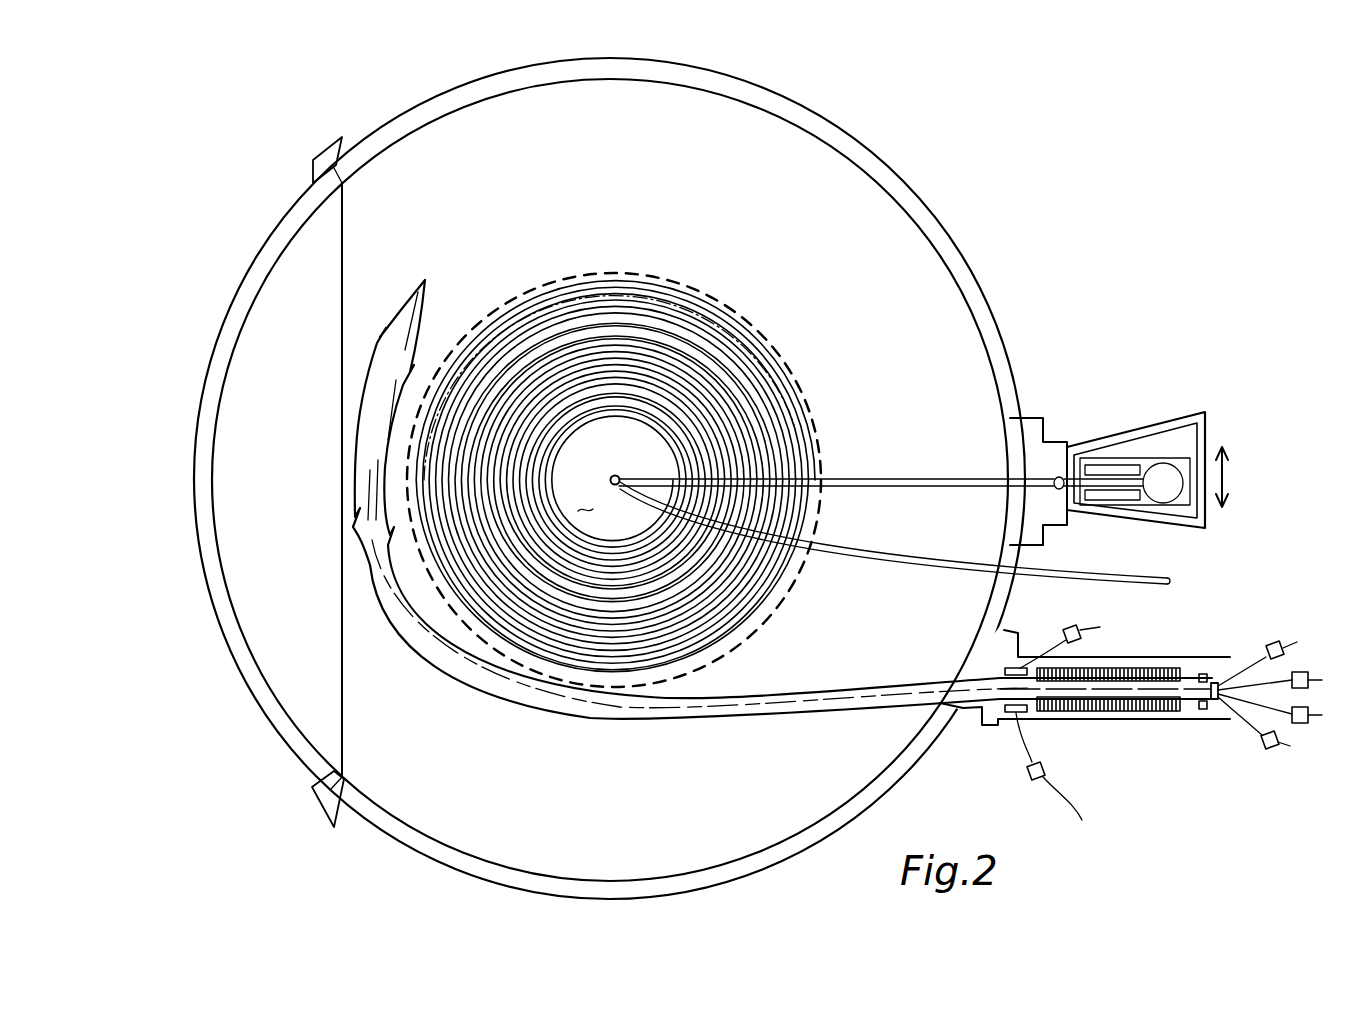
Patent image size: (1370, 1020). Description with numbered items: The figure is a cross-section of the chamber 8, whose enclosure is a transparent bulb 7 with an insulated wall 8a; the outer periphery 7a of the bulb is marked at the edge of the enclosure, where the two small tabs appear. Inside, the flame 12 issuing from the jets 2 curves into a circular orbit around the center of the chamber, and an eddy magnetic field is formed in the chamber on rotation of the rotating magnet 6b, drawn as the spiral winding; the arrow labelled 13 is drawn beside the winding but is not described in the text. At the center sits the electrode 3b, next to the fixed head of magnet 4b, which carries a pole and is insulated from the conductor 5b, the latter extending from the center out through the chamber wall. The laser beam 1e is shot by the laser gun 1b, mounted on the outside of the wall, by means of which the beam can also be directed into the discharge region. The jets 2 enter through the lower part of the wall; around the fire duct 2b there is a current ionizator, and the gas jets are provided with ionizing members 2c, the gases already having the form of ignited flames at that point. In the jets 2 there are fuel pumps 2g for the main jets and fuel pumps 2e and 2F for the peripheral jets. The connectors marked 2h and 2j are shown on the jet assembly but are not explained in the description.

The laser gun 1b is at (1120, 415).
The laser beam 1e is at (905, 478).
The jets 2 is at (1025, 748).
The fire duct 2b is at (1080, 690).
The ionizing members 2c is at (1125, 708).
The fuel pump for peripheral jets 2e is at (1283, 645).
The fuel pump for peripheral jets 2F is at (1265, 750).
The fuel pumps for main jets 2g is at (1310, 678).
The contact element 2h is at (1066, 636).
The contact 2j is at (1206, 673).
The electrode 3b is at (615, 476).
The fixed head of magnet 4b is at (606, 519).
The conductor 5b is at (1160, 580).
The rotating magnet 6b is at (645, 312).
The transparent bulb 7 is at (194, 476).
The outer periphery 7a is at (321, 160).
The chamber 8 is at (768, 170).
The insulated wall 8a is at (871, 158).
The flame 12 is at (405, 330).
The winding direction 13 is at (803, 360).